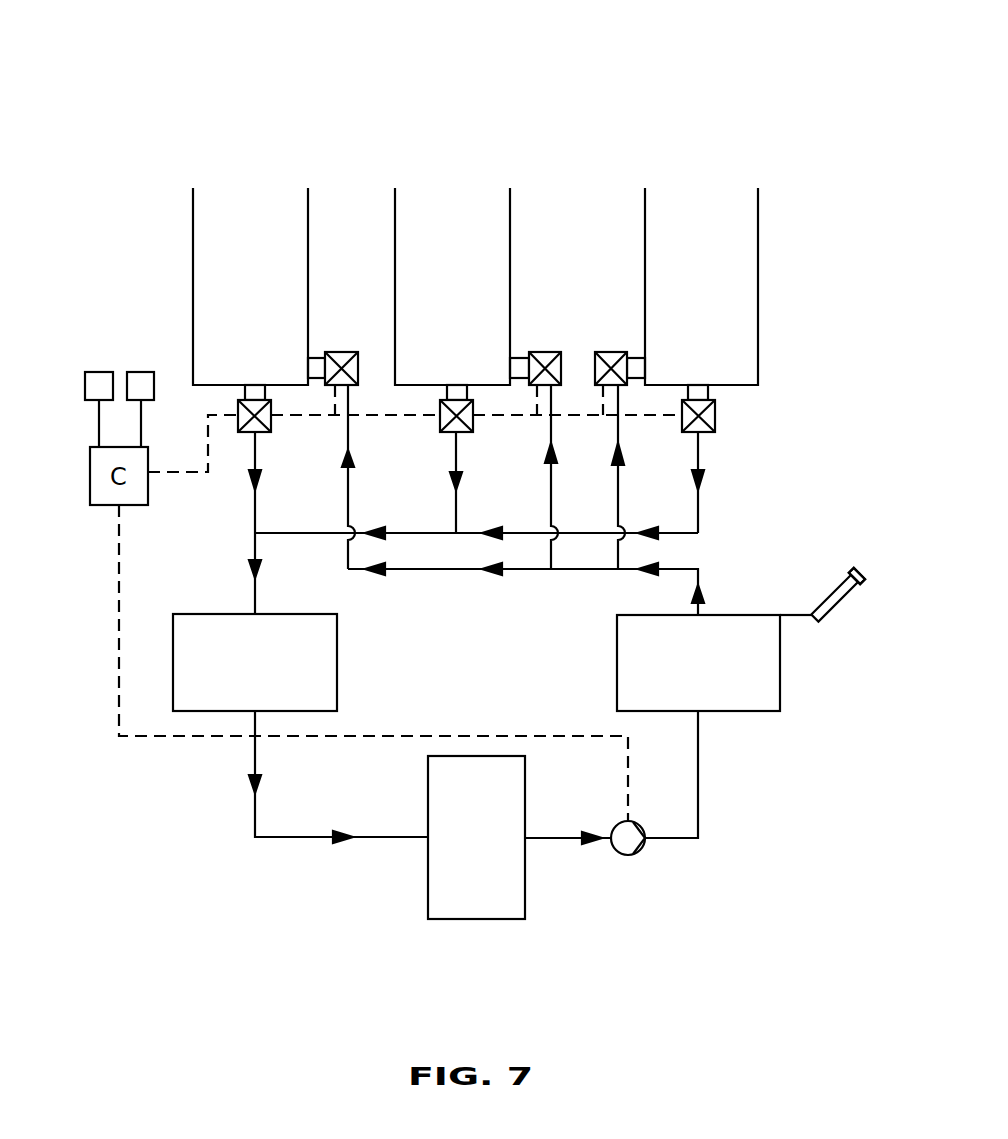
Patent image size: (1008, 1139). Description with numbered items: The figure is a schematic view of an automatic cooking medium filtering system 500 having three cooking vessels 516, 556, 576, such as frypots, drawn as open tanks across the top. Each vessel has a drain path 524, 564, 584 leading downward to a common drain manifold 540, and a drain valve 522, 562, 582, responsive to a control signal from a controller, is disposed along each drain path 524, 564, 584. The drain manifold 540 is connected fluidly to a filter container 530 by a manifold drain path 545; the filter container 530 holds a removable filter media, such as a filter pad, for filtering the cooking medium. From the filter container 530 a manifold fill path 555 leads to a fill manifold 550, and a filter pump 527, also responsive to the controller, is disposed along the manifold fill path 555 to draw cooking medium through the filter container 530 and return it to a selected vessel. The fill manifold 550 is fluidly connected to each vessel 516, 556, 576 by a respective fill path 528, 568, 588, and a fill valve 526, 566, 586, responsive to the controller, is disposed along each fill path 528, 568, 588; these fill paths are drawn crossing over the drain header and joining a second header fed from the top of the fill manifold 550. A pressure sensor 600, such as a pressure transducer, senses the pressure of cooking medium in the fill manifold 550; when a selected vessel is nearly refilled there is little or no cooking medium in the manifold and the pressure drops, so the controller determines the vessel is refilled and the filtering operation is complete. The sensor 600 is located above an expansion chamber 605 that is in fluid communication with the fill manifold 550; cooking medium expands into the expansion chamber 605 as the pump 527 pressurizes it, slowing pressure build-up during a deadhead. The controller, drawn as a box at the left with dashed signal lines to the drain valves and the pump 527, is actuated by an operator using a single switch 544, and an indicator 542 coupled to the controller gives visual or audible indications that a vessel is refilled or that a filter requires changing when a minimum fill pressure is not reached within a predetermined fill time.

The filtering system 500 is at (192, 108).
The cooking vessel 516 is at (273, 195).
The cooking vessel 556 is at (478, 195).
The cooking vessel 576 is at (733, 195).
The drain valve 522 is at (238, 413).
The drain path 524 is at (254, 500).
The fill valve 526 is at (345, 352).
The fill path 528 is at (348, 487).
The drain valve 562 is at (440, 425).
The drain path 564 is at (457, 500).
The fill valve 566 is at (541, 352).
The fill path 568 is at (551, 480).
The drain valve 582 is at (715, 414).
The drain path 584 is at (698, 507).
The fill valve 586 is at (608, 352).
The fill path 588 is at (618, 495).
The indicator 542 is at (97, 372).
The single switch 544 is at (141, 372).
The drain manifold 540 is at (337, 675).
The manifold drain path 545 is at (254, 815).
The filter container 530 is at (475, 919).
The filter pump 527 is at (620, 852).
The manifold fill path 555 is at (698, 800).
The fill manifold 550 is at (780, 688).
The pressure sensor 600 is at (852, 567).
The expansion chamber 605 is at (855, 585).